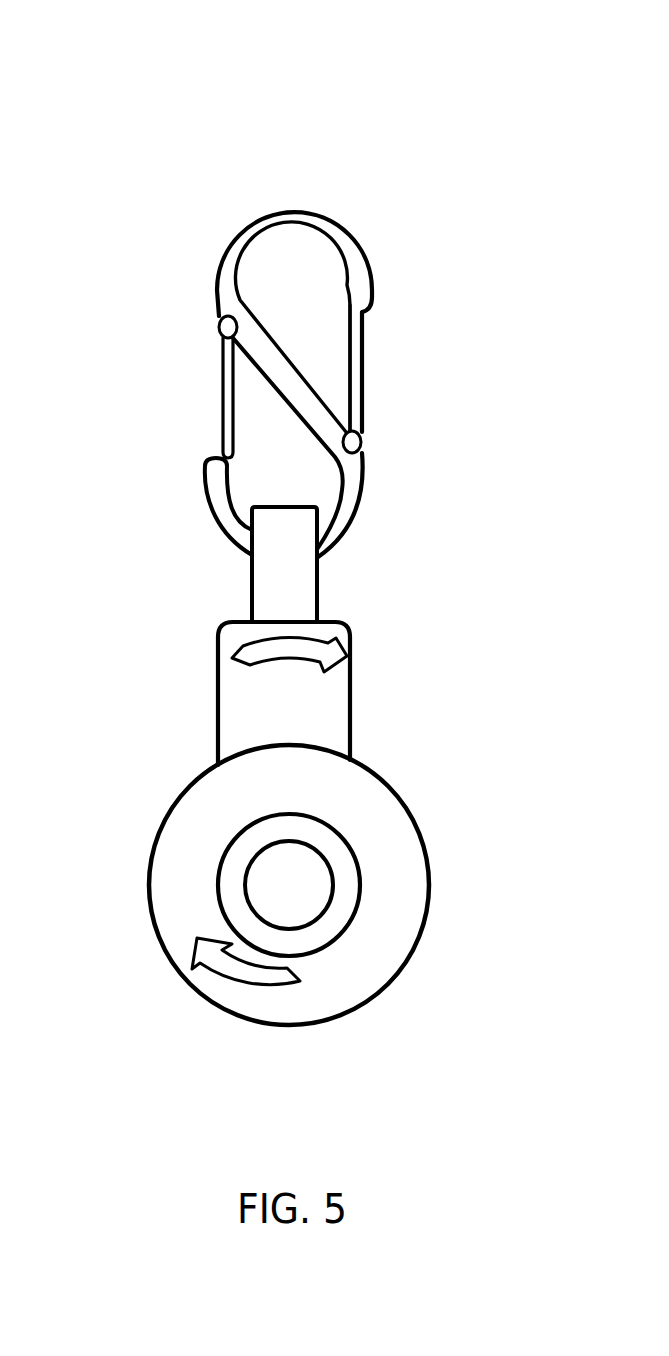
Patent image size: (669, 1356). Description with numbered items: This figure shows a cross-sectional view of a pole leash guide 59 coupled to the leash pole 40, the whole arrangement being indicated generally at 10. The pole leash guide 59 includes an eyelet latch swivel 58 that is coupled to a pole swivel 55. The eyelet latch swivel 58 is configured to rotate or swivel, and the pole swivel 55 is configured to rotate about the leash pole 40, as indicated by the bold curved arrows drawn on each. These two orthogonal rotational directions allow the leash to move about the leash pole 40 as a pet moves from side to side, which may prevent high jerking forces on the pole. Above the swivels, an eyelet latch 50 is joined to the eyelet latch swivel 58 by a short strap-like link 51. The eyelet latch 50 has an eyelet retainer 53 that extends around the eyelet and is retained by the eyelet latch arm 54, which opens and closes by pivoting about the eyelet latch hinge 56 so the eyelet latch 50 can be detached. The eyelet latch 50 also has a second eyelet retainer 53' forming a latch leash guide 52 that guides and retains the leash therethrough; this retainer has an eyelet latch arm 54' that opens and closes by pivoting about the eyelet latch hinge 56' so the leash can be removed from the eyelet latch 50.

The accessory attachment assembly 10 is at (146, 141).
The leash pole 40 is at (350, 880).
The eyelet latch 50 is at (348, 498).
The strap 51 is at (322, 510).
The latch leash guide 52 is at (272, 223).
The eyelet retainer 53 is at (178, 508).
The eyelet retainer 53' is at (346, 327).
The eyelet latch arm 54 is at (160, 416).
The eyelet latch arm 54' is at (423, 377).
The pole swivel 55 is at (367, 812).
The eyelet latch hinge 56 is at (162, 290).
The eyelet latch hinge 56' is at (420, 476).
The eyelet latch swivel 58 is at (314, 697).
The pole leash guide 59 is at (382, 848).